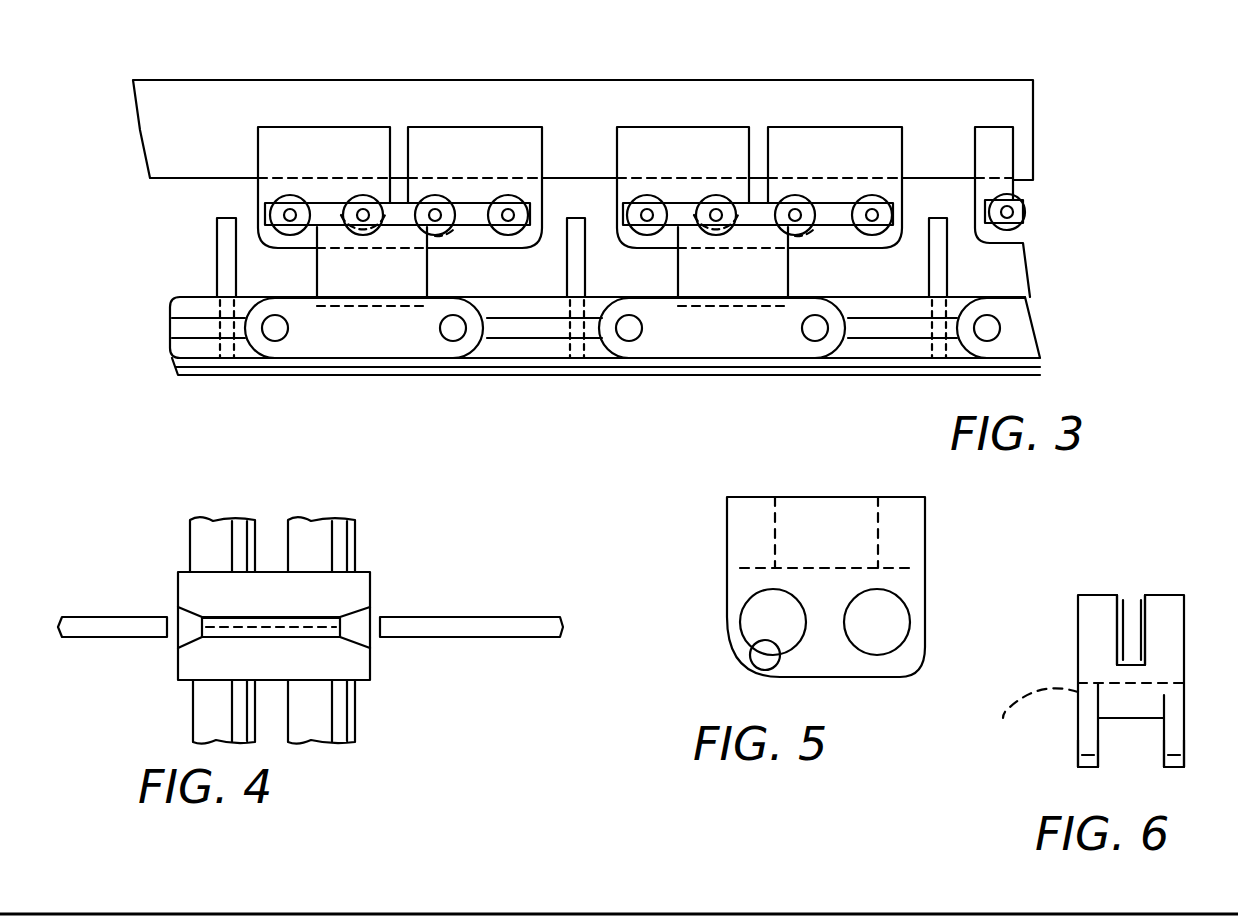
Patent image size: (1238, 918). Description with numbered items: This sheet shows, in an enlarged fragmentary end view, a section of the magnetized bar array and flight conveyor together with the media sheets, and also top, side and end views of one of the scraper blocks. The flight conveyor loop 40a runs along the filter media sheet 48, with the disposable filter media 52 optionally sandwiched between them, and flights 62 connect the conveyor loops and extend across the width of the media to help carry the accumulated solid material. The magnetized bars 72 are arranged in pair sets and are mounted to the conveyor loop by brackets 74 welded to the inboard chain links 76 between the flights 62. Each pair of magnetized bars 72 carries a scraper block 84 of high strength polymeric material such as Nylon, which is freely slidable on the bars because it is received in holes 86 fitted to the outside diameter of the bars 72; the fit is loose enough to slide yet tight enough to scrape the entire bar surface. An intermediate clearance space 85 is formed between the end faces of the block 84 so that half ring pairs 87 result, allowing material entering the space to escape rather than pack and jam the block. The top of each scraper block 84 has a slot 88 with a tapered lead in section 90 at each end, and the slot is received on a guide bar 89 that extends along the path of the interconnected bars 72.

In FIG. 3, the flight conveyor loop 40a is at (311, 344).
In FIG. 3, the filter media sheet 48 is at (757, 372).
In FIG. 3, the disposable filter media 52 is at (193, 370).
In FIG. 3, the flight 62 is at (217, 247).
In FIG. 3, the magnetized bar 72 is at (282, 194).
In FIG. 3, the bracket 74 is at (318, 270).
In FIG. 3, the chain link 76 is at (395, 345).
In FIG. 3, the scraper block 84 is at (256, 126).
In FIG. 4, the scraper block 84 is at (362, 674).
In FIG. 5, the scraper block 84 is at (722, 586).
In FIG. 6, the scraper block 84 is at (1076, 633).
In FIG. 6, the clearance space 85 is at (1147, 758).
In FIG. 5, the hole 86 is at (778, 668).
In FIG. 6, the hole 86 is at (1038, 726).
In FIG. 6, the half ring pair 87 is at (1092, 767).
In FIG. 4, the slot 88 is at (225, 636).
In FIG. 6, the slot 88 is at (1131, 612).
In FIG. 4, the guide bar 89 is at (435, 617).
In FIG. 4, the tapered lead in section 90 is at (185, 617).
In FIG. 6, the tapered lead in section 90 is at (1121, 605).